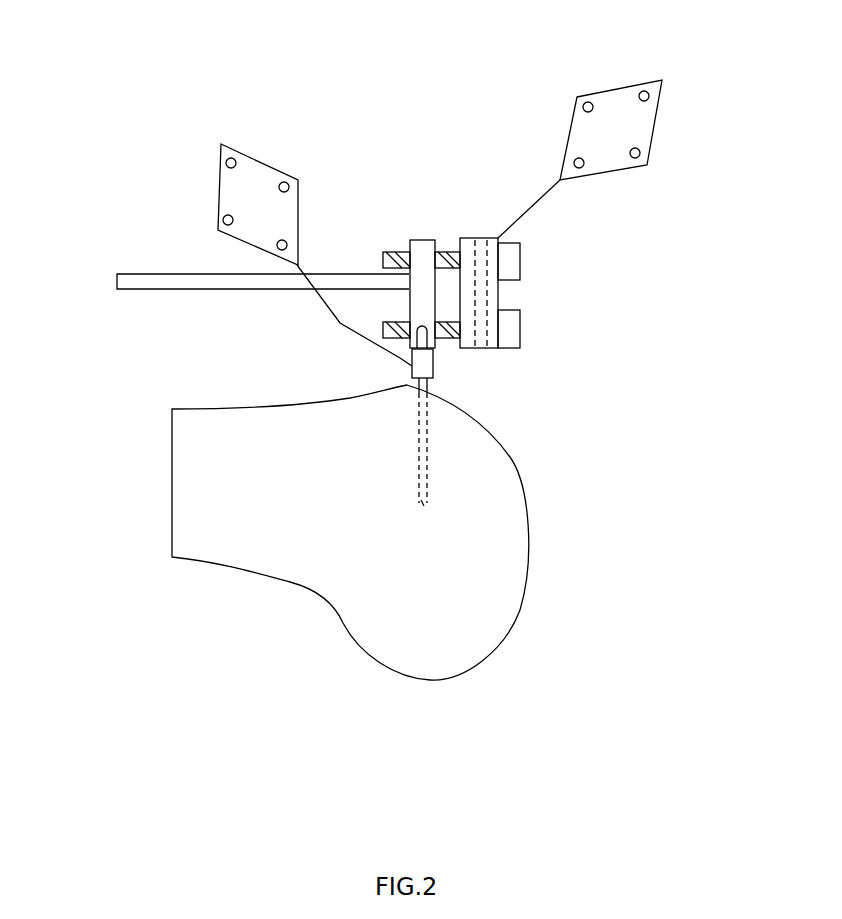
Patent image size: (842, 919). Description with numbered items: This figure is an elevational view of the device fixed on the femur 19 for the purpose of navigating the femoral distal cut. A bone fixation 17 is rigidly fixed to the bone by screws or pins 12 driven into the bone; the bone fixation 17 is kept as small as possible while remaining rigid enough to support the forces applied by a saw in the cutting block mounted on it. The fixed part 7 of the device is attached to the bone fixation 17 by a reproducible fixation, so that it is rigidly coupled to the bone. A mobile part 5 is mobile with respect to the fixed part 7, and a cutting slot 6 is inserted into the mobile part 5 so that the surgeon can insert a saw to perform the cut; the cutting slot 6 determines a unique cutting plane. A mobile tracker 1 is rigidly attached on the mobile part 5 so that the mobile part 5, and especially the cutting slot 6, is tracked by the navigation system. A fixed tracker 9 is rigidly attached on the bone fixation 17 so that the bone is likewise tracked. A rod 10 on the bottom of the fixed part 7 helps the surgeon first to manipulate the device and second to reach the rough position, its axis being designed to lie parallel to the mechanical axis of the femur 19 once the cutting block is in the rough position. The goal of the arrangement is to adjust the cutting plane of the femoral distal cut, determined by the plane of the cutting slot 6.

The mobile tracker 1 is at (650, 137).
The mobile part 5 is at (477, 238).
The cutting slot 6 is at (491, 238).
The fixed part 7 is at (422, 238).
The fixed tracker 9 is at (221, 160).
The rod 10 is at (273, 283).
The screws or pins 12 is at (419, 428).
The bone fixation 17 is at (433, 372).
The femur 19 is at (230, 513).